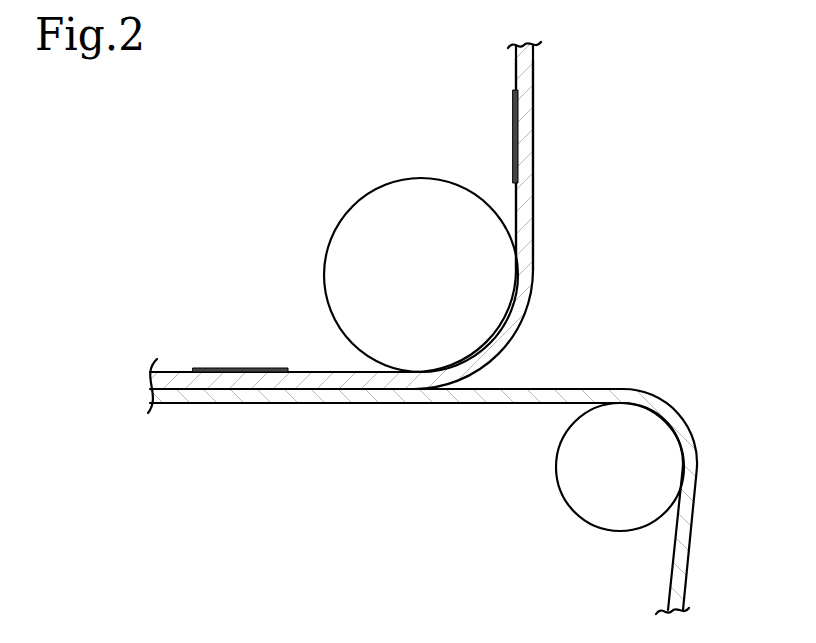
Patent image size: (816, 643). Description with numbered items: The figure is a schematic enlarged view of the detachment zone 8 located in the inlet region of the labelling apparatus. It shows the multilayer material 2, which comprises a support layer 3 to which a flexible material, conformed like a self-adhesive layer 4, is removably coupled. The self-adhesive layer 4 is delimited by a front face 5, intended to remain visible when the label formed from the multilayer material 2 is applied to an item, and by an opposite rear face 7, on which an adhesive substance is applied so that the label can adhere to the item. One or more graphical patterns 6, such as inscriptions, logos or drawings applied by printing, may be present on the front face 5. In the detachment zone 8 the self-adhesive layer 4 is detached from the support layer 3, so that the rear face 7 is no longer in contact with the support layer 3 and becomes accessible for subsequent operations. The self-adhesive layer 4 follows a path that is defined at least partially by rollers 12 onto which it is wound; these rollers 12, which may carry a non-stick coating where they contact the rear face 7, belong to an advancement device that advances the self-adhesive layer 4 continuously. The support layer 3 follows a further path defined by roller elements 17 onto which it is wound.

The multilayer material 2 is at (120, 394).
The support layer 3 is at (283, 400).
The self-adhesive layer 4 is at (325, 378).
The front face 5 is at (518, 207).
The graphical pattern 6 is at (235, 371).
The rear face 7 is at (534, 232).
The detachment zone 8 is at (588, 339).
The roller 12 is at (388, 222).
The roller element 17 is at (605, 471).